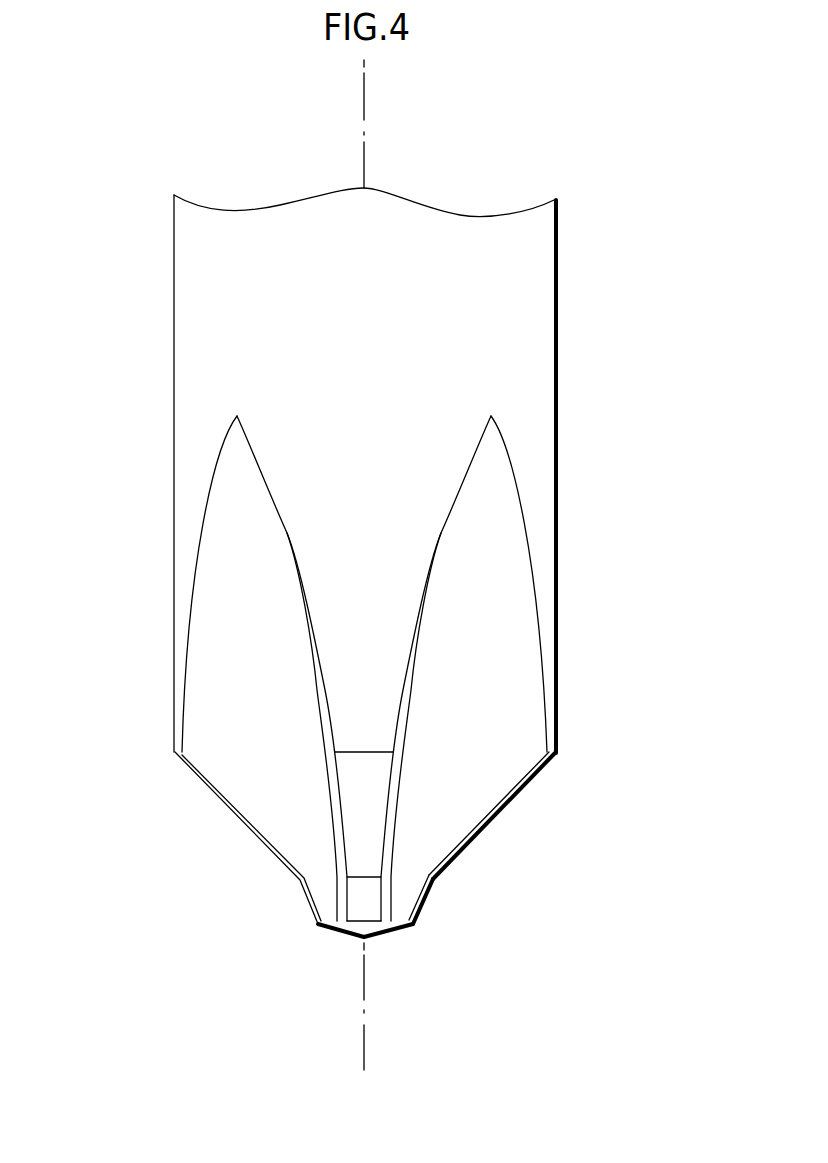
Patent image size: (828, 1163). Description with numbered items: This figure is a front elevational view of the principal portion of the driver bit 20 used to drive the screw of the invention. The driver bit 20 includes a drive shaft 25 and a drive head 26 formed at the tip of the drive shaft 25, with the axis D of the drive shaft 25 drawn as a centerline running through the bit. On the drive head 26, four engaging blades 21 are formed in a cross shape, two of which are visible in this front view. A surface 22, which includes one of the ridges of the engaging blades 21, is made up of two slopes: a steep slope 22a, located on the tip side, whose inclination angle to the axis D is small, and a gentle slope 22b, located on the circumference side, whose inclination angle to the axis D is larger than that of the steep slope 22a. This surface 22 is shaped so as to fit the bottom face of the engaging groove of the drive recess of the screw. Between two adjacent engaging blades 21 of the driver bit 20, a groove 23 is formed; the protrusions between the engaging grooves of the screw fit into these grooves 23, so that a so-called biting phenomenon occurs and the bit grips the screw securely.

The driver bit 20 is at (383, 296).
The engaging blade 21 is at (525, 717).
The surface 22 is at (525, 844).
The steep slope 22a is at (433, 890).
The gentle slope 22b is at (504, 812).
The groove 23 is at (316, 702).
The drive shaft 25 is at (153, 280).
The drive head 26 is at (155, 778).
The axis D is at (366, 1002).